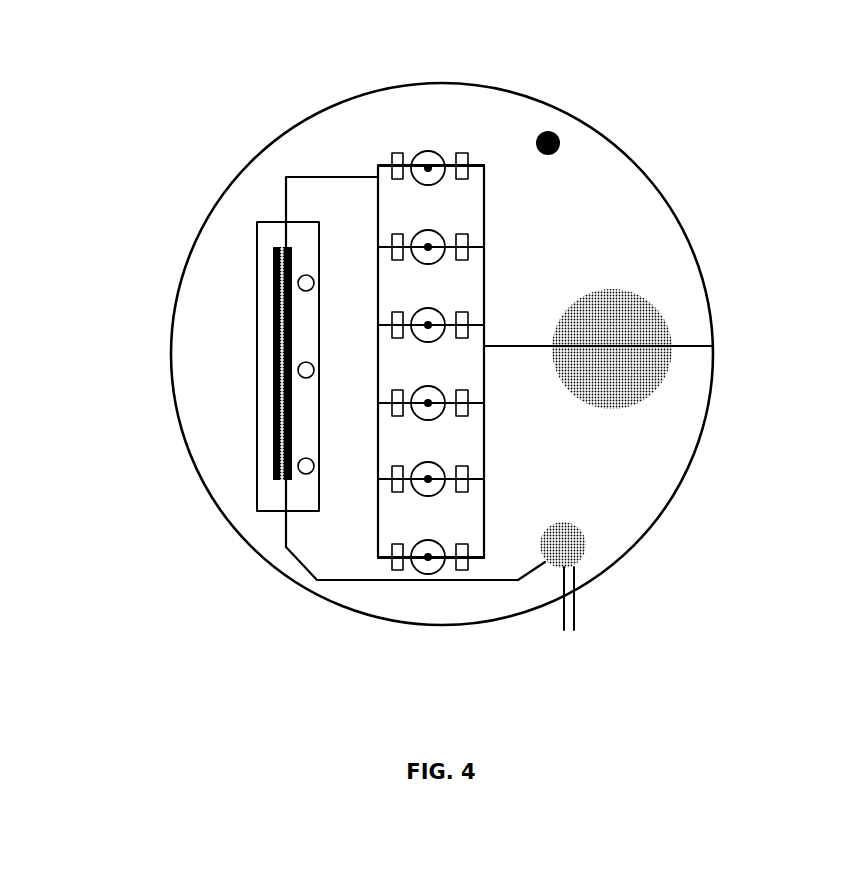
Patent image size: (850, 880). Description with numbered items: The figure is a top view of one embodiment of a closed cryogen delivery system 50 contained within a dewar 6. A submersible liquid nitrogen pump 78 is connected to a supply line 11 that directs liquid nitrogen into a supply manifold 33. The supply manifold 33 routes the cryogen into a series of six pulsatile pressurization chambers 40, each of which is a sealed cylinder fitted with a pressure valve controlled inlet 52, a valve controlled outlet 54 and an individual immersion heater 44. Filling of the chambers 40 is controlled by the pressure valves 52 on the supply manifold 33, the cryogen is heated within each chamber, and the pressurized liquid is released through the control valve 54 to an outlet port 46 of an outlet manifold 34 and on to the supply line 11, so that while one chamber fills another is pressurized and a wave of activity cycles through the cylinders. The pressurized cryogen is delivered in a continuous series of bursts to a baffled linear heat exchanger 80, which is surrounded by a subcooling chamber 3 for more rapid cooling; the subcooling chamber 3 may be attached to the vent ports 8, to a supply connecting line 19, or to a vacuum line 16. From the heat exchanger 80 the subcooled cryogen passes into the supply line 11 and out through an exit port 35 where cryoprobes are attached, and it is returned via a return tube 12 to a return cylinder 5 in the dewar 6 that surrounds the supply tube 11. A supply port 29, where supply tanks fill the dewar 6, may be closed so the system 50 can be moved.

The system 50 is at (170, 120).
The dewar 6 is at (707, 431).
The subcooling chamber 3 is at (257, 258).
The vent ports 8 is at (275, 278).
The baffled linear heat exchanger 80 is at (275, 318).
The vacuum line 16 is at (273, 467).
The supply connecting line 19 is at (273, 369).
The supply line 11 is at (348, 177).
The exit port 35 is at (562, 570).
The return tube 12 is at (577, 612).
The outlet manifold 34 is at (377, 227).
The supply manifold 33 is at (485, 440).
The outlet port 46 is at (375, 173).
The valve controlled outlet 54 is at (397, 152).
The pressure valve controlled inlet 52 is at (463, 152).
The pulsatile pressurization chamber 40 is at (417, 492).
The immersion heater 44 is at (433, 495).
The supply port 29 is at (557, 137).
The submersible liquid nitrogen pump 78 is at (668, 320).
The return cylinder 5 is at (590, 545).